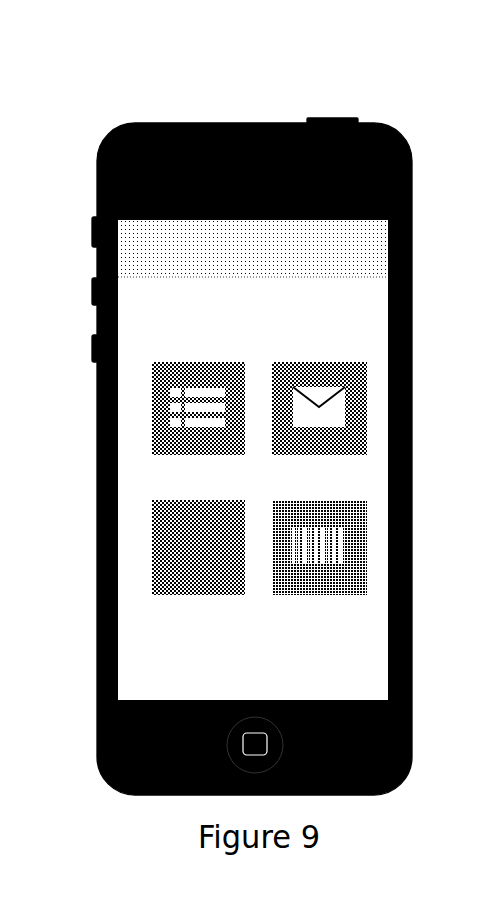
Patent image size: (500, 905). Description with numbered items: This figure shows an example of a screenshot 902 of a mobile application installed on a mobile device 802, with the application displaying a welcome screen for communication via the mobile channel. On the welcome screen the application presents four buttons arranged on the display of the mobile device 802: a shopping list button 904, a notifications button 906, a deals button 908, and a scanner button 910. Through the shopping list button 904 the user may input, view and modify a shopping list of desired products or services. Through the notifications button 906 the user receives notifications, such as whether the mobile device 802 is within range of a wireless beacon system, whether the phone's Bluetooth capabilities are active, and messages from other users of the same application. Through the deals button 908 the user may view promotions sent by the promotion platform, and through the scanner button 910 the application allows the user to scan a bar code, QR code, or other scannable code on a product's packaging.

The mobile device 802 is at (387, 120).
The screenshot 902 is at (372, 274).
The shopping list button 904 is at (155, 400).
The notifications button 906 is at (364, 380).
The deals button 908 is at (155, 538).
The scanner button 910 is at (364, 520).